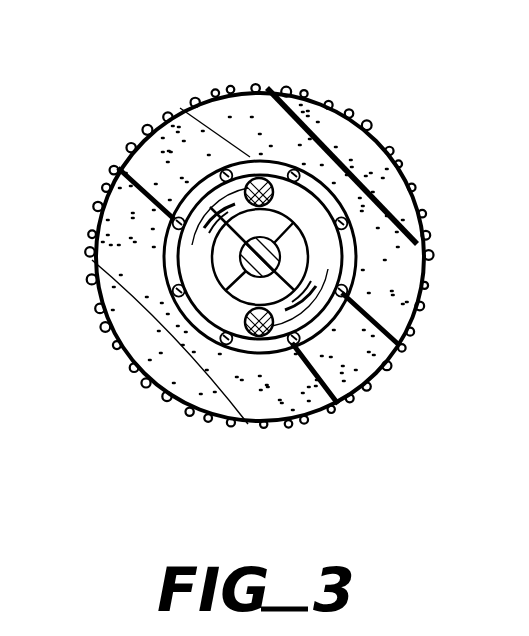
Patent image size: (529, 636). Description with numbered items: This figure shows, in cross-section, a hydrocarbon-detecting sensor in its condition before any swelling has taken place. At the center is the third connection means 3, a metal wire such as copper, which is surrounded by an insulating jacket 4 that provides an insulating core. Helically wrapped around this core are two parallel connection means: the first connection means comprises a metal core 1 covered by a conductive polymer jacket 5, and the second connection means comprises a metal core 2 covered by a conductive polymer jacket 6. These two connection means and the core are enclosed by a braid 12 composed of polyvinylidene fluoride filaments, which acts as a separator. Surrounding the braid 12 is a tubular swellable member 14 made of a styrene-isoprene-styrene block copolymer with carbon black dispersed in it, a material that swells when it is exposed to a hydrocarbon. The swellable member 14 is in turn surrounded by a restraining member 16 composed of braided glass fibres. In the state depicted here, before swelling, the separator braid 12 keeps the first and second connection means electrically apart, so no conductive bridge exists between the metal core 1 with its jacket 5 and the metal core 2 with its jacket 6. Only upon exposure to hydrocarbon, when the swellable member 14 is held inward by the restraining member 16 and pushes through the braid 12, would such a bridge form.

The metal core 1 is at (250, 343).
The metal core 2 is at (193, 100).
The third connection means 3 is at (250, 253).
The insulating jacket 4 is at (298, 252).
The conductive polymer jacket 5 is at (282, 353).
The conductive polymer jacket 6 is at (312, 174).
The braid 12 is at (226, 339).
The swellable member 14 is at (357, 328).
The restraining member 16 is at (270, 88).